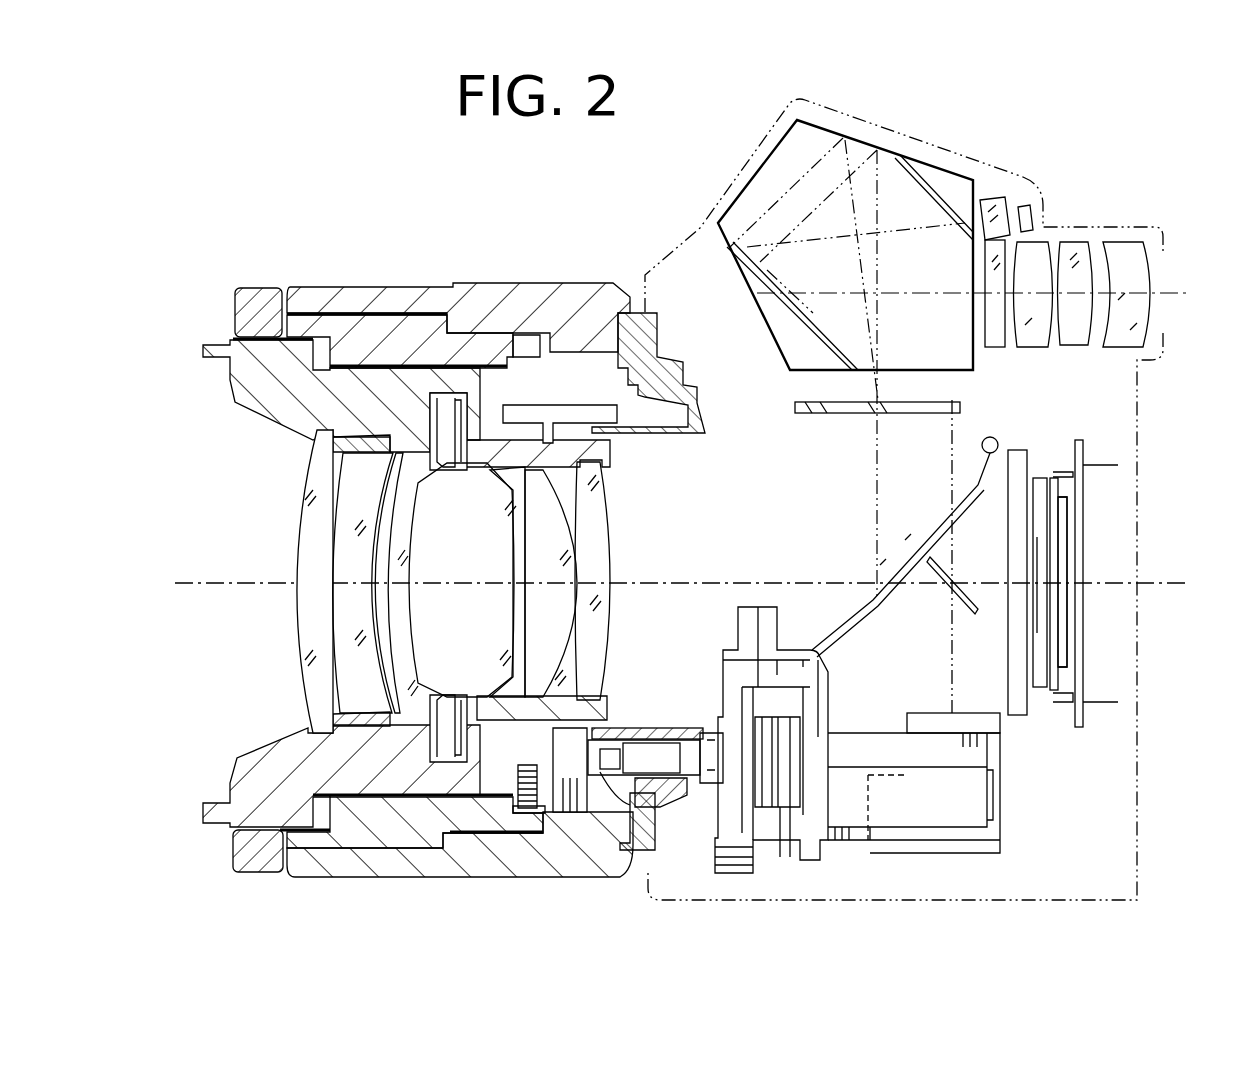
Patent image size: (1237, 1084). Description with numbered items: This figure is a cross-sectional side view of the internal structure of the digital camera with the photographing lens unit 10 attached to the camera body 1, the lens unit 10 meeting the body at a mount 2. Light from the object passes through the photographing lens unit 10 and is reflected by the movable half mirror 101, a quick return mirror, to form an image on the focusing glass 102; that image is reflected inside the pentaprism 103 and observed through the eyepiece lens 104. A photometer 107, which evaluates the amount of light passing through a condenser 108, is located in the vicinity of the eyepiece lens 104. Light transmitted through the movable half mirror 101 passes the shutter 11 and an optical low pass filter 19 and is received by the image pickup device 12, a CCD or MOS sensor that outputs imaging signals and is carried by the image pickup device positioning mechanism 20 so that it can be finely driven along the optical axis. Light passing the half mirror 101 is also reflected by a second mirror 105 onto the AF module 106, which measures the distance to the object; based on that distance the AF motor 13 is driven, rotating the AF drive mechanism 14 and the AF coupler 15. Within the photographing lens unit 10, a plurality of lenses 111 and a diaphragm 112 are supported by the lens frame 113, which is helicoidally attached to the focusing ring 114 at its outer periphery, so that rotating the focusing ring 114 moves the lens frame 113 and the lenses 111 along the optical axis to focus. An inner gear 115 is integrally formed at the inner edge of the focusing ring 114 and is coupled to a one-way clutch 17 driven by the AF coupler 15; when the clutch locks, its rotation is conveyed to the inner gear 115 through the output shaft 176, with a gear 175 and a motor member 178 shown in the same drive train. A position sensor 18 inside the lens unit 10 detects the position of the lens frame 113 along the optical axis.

The camera body 1 is at (1078, 903).
The lens mount 2 is at (658, 337).
The photographing lens unit 10 is at (258, 465).
The shutter 11 is at (1018, 712).
The image pickup device 12 is at (1068, 600).
The AF motor 13 is at (837, 793).
The AF drive mechanism 14 is at (772, 855).
The AF coupler 15 is at (660, 750).
The one-way clutch 17 is at (575, 803).
The position sensor 18 is at (605, 410).
The optical low pass filter 19 is at (1040, 690).
The image pickup device positioning mechanism 20 is at (1093, 660).
The movable half mirror 101 is at (948, 520).
The focusing glass 102 is at (845, 410).
The pentaprism 103 is at (905, 178).
The eyepiece lens 104 is at (1160, 363).
The second mirror 105 is at (950, 573).
The AF module 106 is at (927, 723).
The photometer 107 is at (1030, 222).
The condenser 108 is at (1000, 205).
The lenses 111 is at (400, 632).
The diaphragm 112 is at (440, 770).
The lens frame 113 is at (385, 395).
The focusing ring 114 is at (262, 300).
The inner gear 115 is at (527, 355).
The drive gear 175 is at (658, 810).
The output shaft 176 is at (543, 780).
The lens drive motor 178 is at (528, 810).